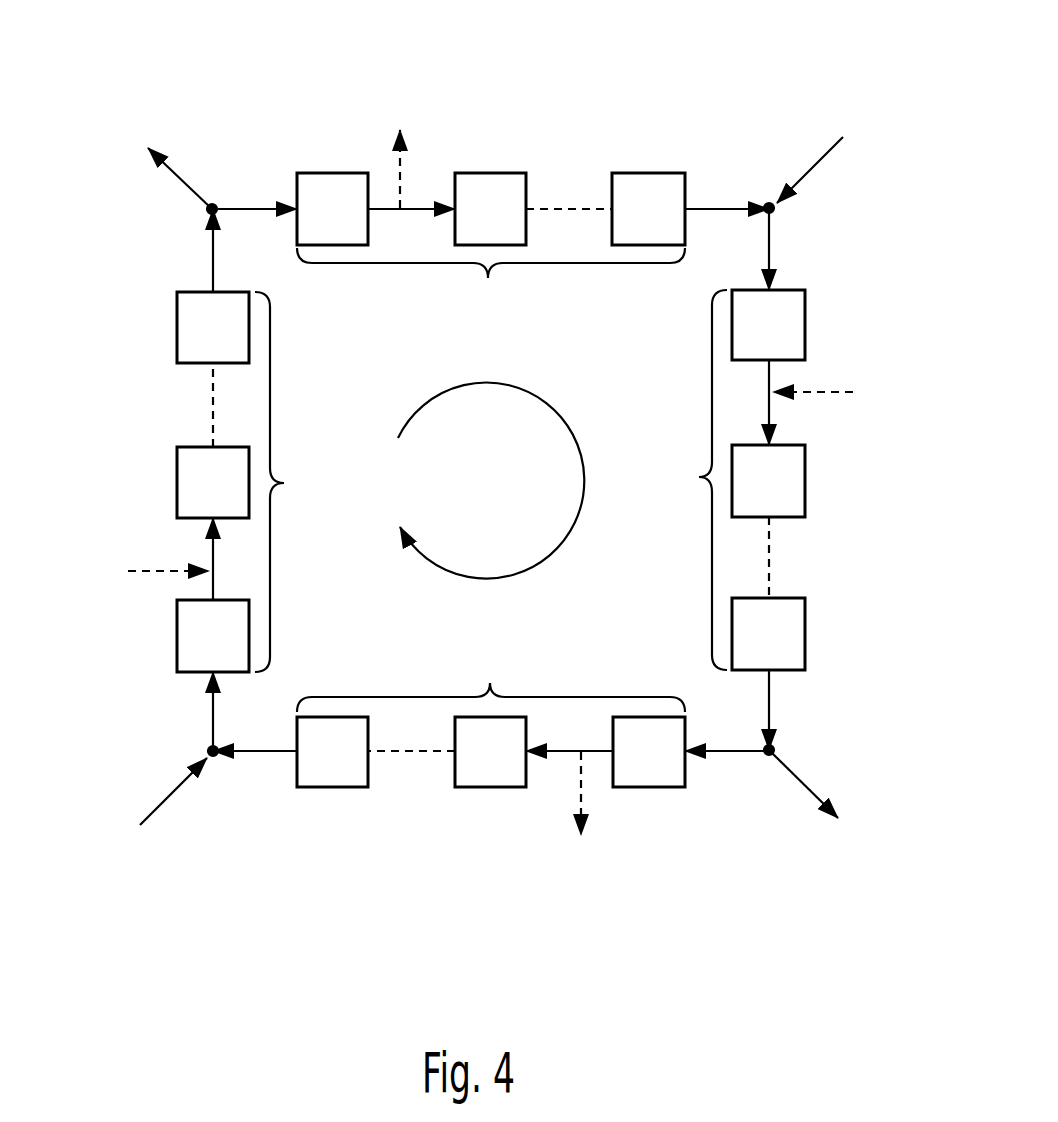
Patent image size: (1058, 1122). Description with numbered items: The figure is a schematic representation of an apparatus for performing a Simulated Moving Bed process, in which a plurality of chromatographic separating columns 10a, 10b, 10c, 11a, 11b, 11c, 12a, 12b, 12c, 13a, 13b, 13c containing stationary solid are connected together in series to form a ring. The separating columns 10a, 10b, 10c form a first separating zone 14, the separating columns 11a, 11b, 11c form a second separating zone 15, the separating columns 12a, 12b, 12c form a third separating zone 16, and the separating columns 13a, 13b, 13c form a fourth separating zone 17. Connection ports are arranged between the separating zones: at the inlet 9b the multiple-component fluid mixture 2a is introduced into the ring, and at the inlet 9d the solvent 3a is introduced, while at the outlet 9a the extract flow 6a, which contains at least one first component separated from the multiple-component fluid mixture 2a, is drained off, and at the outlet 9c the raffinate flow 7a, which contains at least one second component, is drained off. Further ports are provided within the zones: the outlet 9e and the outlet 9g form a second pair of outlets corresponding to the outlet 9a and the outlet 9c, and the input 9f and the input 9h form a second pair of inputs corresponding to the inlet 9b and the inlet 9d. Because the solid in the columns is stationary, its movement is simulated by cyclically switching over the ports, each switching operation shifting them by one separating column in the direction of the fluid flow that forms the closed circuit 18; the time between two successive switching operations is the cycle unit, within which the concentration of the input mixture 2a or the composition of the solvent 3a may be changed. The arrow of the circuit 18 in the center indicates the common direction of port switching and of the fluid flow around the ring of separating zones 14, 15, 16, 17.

The multiple-component fluid mixture 2a is at (853, 88).
The solvent 3a is at (138, 868).
The extract flow 6a is at (138, 88).
The raffinate flow 7a is at (852, 865).
The outlet 9a is at (218, 204).
The inlet 9b is at (765, 203).
The outlet 9c is at (765, 757).
The inlet 9d is at (218, 758).
The outlet 9e is at (408, 205).
The input 9f is at (773, 383).
The outlet 9g is at (580, 757).
The input 9h is at (210, 563).
The chromatographic separating column 10a is at (177, 633).
The chromatographic separating column 10b is at (177, 480).
The chromatographic separating column 10c is at (177, 325).
The chromatographic separating column 11a is at (332, 173).
The chromatographic separating column 11b is at (490, 173).
The chromatographic separating column 11c is at (647, 173).
The chromatographic separating column 12a is at (805, 325).
The chromatographic separating column 12b is at (805, 480).
The chromatographic separating column 12c is at (805, 633).
The chromatographic separating column 13a is at (648, 787).
The chromatographic separating column 13b is at (490, 787).
The chromatographic separating column 13c is at (333, 787).
The first separating zone 14 is at (284, 483).
The second separating zone 15 is at (488, 278).
The third separating zone 16 is at (699, 477).
The fourth separating zone 17 is at (490, 683).
The circuit 18 is at (518, 382).